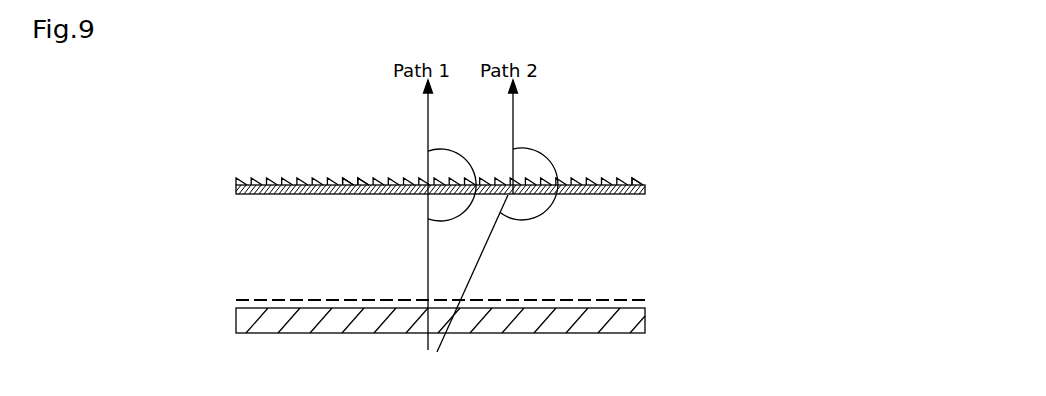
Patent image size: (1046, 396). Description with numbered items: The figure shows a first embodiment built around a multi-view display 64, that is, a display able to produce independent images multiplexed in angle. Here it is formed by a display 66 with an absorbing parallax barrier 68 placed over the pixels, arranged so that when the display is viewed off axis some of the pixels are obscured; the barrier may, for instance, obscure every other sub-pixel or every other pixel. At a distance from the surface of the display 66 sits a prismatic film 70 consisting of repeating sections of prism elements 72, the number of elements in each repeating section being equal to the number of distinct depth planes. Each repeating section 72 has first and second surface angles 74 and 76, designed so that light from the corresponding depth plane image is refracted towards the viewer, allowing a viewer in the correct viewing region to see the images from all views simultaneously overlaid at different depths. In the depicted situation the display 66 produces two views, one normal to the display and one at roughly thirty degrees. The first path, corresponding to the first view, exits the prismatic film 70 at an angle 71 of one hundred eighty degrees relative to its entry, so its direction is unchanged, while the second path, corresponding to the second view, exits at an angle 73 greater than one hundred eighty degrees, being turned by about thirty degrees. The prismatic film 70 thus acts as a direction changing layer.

The multi-view display 64 is at (657, 285).
The display 66 is at (222, 328).
The parallax barrier 68 is at (224, 293).
The prismatic film 70 is at (222, 182).
The angle 71 is at (447, 153).
The prism elements 72 is at (649, 167).
The angle 73 is at (542, 154).
The first surface angle 74 is at (332, 173).
The second surface angle 76 is at (354, 167).